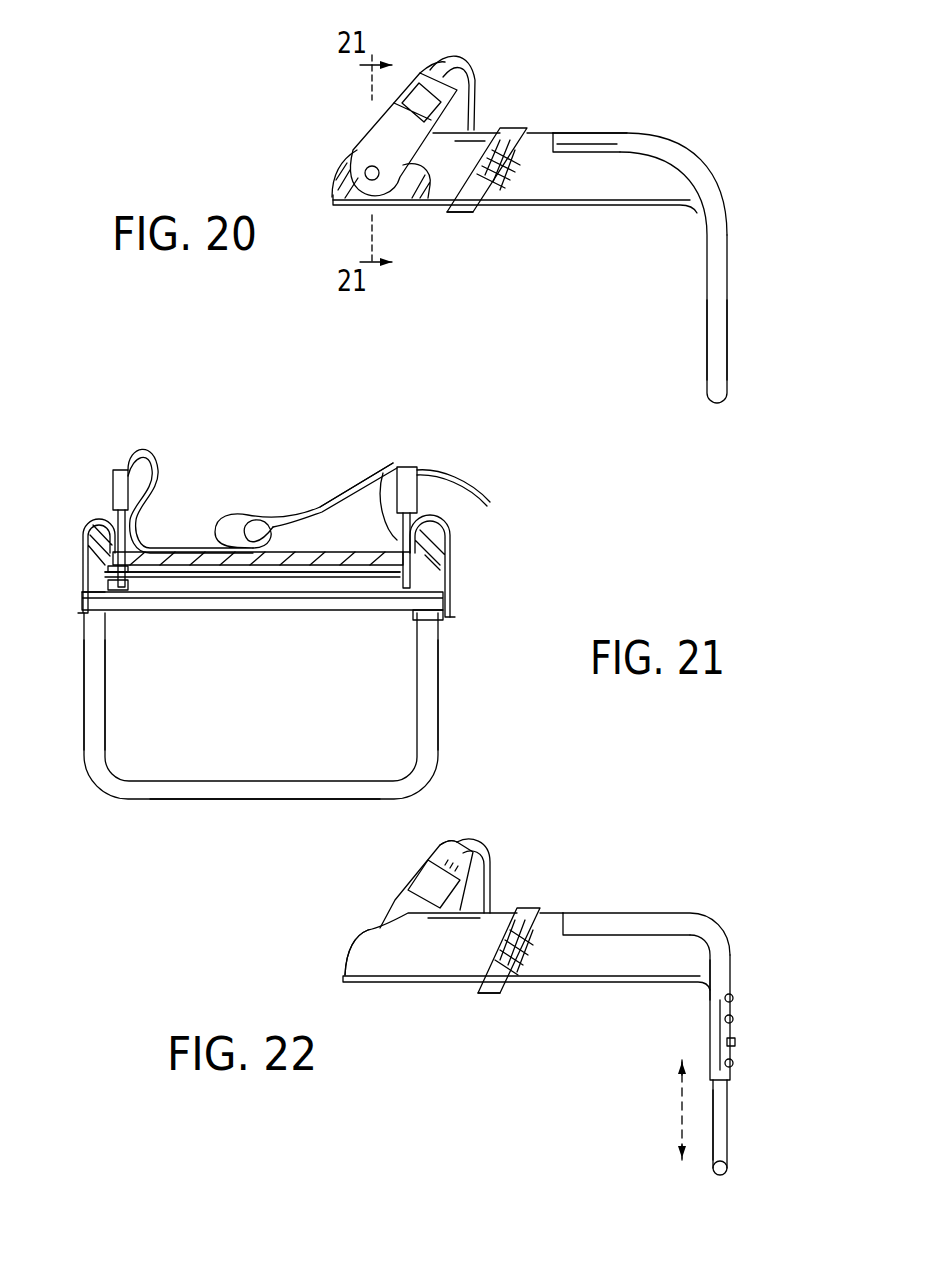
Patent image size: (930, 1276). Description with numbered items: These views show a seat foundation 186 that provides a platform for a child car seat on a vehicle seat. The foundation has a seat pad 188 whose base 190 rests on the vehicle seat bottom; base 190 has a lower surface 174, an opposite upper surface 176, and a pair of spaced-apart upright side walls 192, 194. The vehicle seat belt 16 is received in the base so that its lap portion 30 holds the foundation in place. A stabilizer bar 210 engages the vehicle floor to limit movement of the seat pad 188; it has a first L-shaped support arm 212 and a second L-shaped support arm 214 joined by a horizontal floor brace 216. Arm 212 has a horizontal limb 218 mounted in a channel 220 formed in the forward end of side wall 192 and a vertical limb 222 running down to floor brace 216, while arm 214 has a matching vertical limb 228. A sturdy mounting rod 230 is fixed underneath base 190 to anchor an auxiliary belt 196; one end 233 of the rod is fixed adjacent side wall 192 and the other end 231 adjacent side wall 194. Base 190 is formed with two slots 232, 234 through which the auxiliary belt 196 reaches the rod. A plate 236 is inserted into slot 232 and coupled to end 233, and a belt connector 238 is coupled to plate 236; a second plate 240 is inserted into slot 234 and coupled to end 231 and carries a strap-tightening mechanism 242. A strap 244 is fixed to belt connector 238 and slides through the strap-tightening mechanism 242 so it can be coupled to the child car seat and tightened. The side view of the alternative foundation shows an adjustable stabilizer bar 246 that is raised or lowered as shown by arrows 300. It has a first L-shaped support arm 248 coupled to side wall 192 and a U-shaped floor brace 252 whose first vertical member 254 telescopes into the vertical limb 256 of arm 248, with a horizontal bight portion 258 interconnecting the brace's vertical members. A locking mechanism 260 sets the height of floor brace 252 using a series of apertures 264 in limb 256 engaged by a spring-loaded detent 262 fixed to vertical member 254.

In FIG. 20, the seat belt 16 is at (476, 230).
In FIG. 21, the seat belt 16 is at (458, 575).
In FIG. 22, the seat belt 16 is at (498, 1005).
In FIG. 20, the lap portion 30 is at (458, 196).
In FIG. 21, the lap portion 30 is at (75, 558).
In FIG. 22, the lap portion 30 is at (483, 965).
In FIG. 20, the lower surface 174 is at (635, 205).
In FIG. 21, the lower surface 174 is at (203, 605).
In FIG. 21, the upper surface 176 is at (297, 545).
In FIG. 20, the seat foundation 186 is at (592, 90).
In FIG. 21, the seat foundation 186 is at (535, 556).
In FIG. 22, the seat foundation 186 is at (318, 934).
In FIG. 20, the seat pad 188 is at (598, 212).
In FIG. 21, the seat pad 188 is at (200, 548).
In FIG. 22, the seat pad 188 is at (562, 912).
In FIG. 20, the base 190 is at (538, 135).
In FIG. 21, the base 190 is at (312, 552).
In FIG. 22, the base 190 is at (410, 957).
In FIG. 20, the upright side wall 192 is at (545, 185).
In FIG. 21, the upright side wall 192 is at (95, 572).
In FIG. 22, the upright side wall 192 is at (583, 957).
In FIG. 21, the upright side wall 194 is at (445, 535).
In FIG. 20, the auxiliary belt 196 is at (440, 55).
In FIG. 21, the auxiliary belt 196 is at (320, 488).
In FIG. 22, the auxiliary belt 196 is at (441, 838).
In FIG. 20, the stabilizer bar 210 is at (752, 318).
In FIG. 21, the stabilizer bar 210 is at (475, 675).
In FIG. 20, the first L-shaped support arm 212 is at (702, 290).
In FIG. 21, the first L-shaped support arm 212 is at (80, 690).
In FIG. 21, the second L-shaped support arm 214 is at (445, 706).
In FIG. 21, the horizontal floor brace 216 is at (252, 805).
In FIG. 20, the horizontal limb 218 is at (598, 130).
In FIG. 20, the channel 220 is at (625, 152).
In FIG. 20, the vertical limb 222 is at (718, 255).
In FIG. 21, the vertical limb 222 is at (100, 660).
In FIG. 21, the vertical limb 228 is at (418, 660).
In FIG. 20, the mounting rod 230 is at (372, 168).
In FIG. 21, the mounting rod 230 is at (257, 600).
In FIG. 21, the end of mounting rod 231 is at (420, 620).
In FIG. 21, the slot 232 is at (110, 592).
In FIG. 21, the end of mounting rod 233 is at (130, 592).
In FIG. 21, the slot 234 is at (398, 572).
In FIG. 21, the plate 236 is at (117, 525).
In FIG. 21, the belt connector 238 is at (120, 470).
In FIG. 20, the plate 240 is at (383, 145).
In FIG. 21, the plate 240 is at (395, 468).
In FIG. 22, the plate 240 is at (387, 913).
In FIG. 20, the strap-tightening mechanism 242 is at (412, 70).
In FIG. 21, the strap-tightening mechanism 242 is at (408, 490).
In FIG. 22, the strap-tightening mechanism 242 is at (425, 880).
In FIG. 20, the strap 244 is at (462, 72).
In FIG. 21, the strap 244 is at (270, 518).
In FIG. 22, the strap 244 is at (492, 853).
In FIG. 22, the adjustable stabilizer bar 246 is at (733, 945).
In FIG. 22, the first L-shaped support arm 248 is at (660, 912).
In FIG. 22, the U-shaped floor brace 252 is at (738, 1128).
In FIG. 22, the first vertical member 254 is at (725, 1097).
In FIG. 22, the vertical limb 256 is at (718, 978).
In FIG. 22, the horizontal bight portion 258 is at (722, 1178).
In FIG. 22, the locking mechanism 260 is at (750, 1030).
In FIG. 22, the spring-loaded detent 262 is at (748, 1043).
In FIG. 22, the apertures 264 is at (731, 998).
In FIG. 22, the arrows 300 is at (680, 1120).